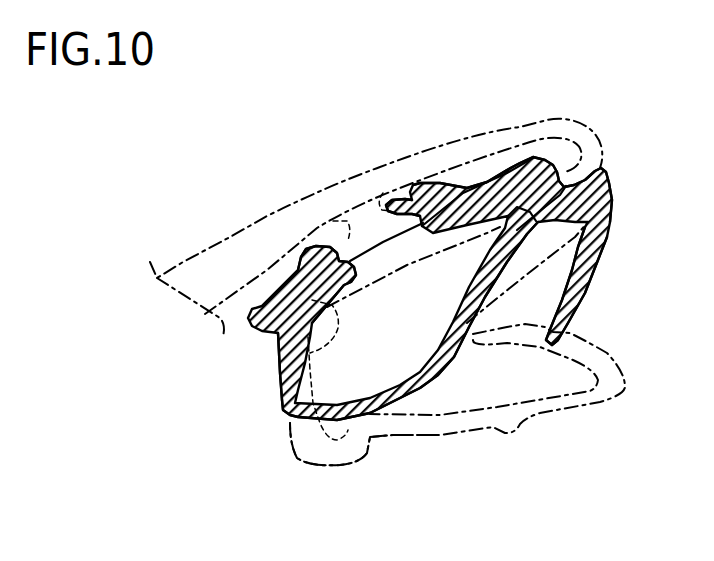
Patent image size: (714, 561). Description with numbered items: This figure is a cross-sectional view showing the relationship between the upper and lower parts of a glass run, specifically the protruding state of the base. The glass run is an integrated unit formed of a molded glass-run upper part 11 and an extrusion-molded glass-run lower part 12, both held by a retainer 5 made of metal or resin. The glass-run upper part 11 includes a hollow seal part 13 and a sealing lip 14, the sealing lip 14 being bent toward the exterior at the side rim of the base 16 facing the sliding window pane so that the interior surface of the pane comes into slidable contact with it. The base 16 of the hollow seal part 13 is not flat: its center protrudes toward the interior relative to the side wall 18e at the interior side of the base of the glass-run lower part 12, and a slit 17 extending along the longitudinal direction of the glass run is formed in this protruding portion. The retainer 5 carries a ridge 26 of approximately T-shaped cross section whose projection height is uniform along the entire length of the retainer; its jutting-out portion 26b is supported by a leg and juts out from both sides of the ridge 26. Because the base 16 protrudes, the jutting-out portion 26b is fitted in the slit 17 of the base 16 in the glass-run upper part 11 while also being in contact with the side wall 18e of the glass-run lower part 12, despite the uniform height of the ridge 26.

The retainer 5 is at (268, 215).
The glass-run upper part 11 is at (280, 394).
The glass-run lower part 12 is at (297, 447).
The hollow seal part 13 is at (410, 393).
The sealing lip 14 is at (580, 303).
The base 16 is at (460, 184).
The slit 17 is at (394, 201).
The side wall 18e is at (283, 366).
The ridge 26 is at (341, 240).
The jutting-out portion 26b is at (380, 243).